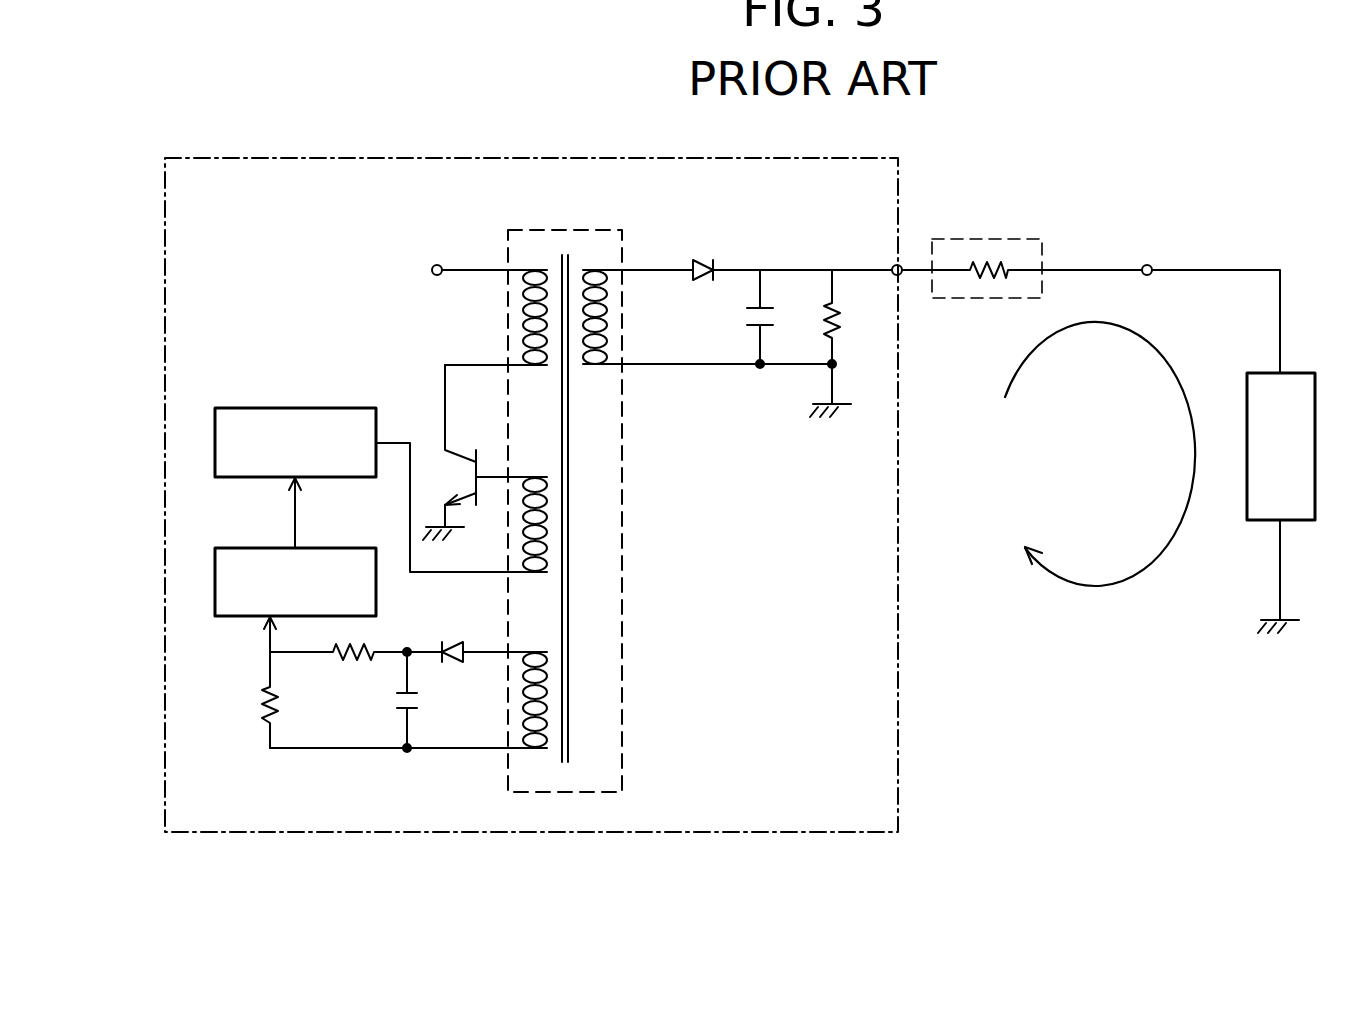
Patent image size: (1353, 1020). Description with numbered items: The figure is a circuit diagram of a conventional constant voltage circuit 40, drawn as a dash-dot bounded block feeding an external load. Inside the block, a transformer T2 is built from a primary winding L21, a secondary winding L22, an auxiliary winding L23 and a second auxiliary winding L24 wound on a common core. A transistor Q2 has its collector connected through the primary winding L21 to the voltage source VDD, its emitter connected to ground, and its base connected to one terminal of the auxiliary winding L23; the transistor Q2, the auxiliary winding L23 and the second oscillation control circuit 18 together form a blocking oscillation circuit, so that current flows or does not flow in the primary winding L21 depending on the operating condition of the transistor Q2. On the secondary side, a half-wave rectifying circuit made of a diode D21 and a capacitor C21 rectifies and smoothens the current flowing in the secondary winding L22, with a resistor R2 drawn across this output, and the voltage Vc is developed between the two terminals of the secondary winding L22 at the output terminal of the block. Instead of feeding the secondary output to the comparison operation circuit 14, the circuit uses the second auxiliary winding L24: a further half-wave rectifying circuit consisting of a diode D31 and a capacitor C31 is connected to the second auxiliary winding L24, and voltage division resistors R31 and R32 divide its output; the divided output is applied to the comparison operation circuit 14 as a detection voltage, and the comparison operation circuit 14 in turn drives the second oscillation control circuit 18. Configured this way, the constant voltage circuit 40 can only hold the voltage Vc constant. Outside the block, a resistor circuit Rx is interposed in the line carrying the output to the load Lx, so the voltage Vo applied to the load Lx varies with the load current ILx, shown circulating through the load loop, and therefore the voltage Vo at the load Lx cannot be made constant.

The constant voltage circuit 40 is at (898, 650).
The second oscillation control circuit 18 is at (332, 407).
The comparison operation circuit 14 is at (240, 548).
The transformer T2 is at (565, 495).
The primary winding L21 is at (523, 316).
The secondary winding L22 is at (608, 310).
The auxiliary winding L23 is at (523, 518).
The second auxiliary winding L24 is at (523, 693).
The transistor Q2 is at (449, 452).
The diode D21 is at (788, 251).
The diode D31 is at (446, 636).
The capacitor C21 is at (739, 319).
The capacitor C31 is at (436, 700).
The resistor R2 is at (847, 343).
The voltage division resistor R31 is at (338, 669).
The voltage division resistor R32 is at (243, 700).
The resistor circuit Rx is at (988, 263).
The voltage Vc is at (862, 268).
The voltage Vo is at (1205, 268).
The voltage source VDD is at (434, 256).
The load Lx is at (1297, 372).
The load current ILx is at (1100, 454).